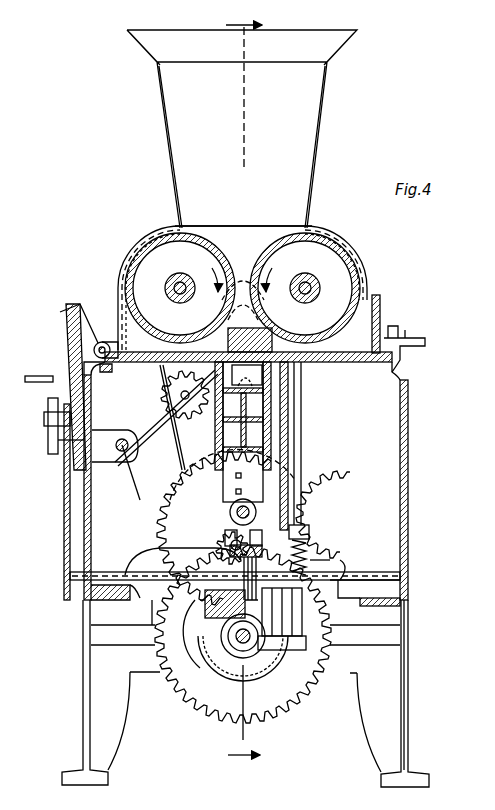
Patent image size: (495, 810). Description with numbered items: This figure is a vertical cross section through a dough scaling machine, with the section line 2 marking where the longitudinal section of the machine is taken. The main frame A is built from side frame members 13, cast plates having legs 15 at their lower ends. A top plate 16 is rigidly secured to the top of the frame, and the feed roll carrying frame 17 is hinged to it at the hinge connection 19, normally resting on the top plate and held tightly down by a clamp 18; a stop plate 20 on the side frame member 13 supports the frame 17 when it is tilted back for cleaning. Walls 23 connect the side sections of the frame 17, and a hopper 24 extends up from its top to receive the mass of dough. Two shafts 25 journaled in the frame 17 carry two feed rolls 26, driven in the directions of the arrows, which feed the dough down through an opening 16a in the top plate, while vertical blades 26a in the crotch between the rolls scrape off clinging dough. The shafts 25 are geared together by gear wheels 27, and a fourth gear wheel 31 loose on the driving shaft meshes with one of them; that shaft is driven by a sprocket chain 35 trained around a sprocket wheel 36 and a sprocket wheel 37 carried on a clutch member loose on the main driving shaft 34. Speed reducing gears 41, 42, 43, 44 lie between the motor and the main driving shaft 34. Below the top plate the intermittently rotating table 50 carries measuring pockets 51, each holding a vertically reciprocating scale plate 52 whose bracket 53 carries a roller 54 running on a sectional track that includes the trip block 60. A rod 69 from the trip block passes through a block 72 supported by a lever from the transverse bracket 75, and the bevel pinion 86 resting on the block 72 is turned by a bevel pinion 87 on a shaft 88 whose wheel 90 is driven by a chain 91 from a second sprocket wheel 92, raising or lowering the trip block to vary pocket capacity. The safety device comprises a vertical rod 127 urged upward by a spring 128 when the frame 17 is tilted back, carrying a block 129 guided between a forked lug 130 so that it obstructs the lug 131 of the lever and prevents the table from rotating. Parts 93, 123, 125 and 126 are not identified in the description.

The section line 2 is at (244, 397).
The hopper 24 is at (318, 162).
The walls 23 is at (138, 232).
The feed rolls 26 is at (268, 234).
The shafts 25 is at (168, 290).
The gear wheels 27 is at (118, 258).
The vertical blades 26a is at (214, 330).
The top plate 16 is at (398, 380).
The opening 16a is at (254, 377).
The clamp 18 is at (396, 347).
The side frame members 13 is at (410, 504).
The legs 15 is at (245, 693).
The feed roll carrying frame 17 is at (120, 330).
The hinge connection 19 is at (94, 350).
The stop plate 20 is at (70, 322).
The handle 93 is at (52, 420).
The second sprocket wheel 92 is at (64, 440).
The chain 91 is at (64, 480).
The arm 125 is at (152, 414).
The pivot pin 126 is at (125, 452).
The link 123 is at (118, 470).
The fourth gear wheel 31 is at (170, 420).
The sprocket wheel 36 is at (188, 420).
The sprocket chain 35 is at (165, 478).
The speed reducing gear 43 is at (225, 545).
The speed reducing gear 42 is at (300, 508).
The speed reducing gear wheel 44 is at (286, 708).
The sprocket wheel 37 is at (237, 640).
The main driving shaft 34 is at (228, 644).
The block 129 is at (292, 660).
The rotatory table 50 is at (272, 412).
The measuring pockets 51 is at (271, 438).
The scale plate 52 is at (265, 426).
The vertical rod 127 is at (300, 460).
The brackets 53 is at (288, 480).
The trip block 60 is at (308, 532).
The spring 128 is at (318, 545).
The rollers 54 is at (236, 508).
The bevel pinion 87 is at (218, 556).
The bevel pinion 86 is at (258, 590).
The wheel 90 is at (74, 582).
The shaft 88 is at (138, 600).
The speed reducing gear 41 is at (152, 620).
The block 72 is at (222, 610).
The forked lug 130 is at (304, 640).
The lug 131 is at (322, 617).
The rod 69 is at (312, 580).
The bracket 75 is at (348, 566).
The main frame A is at (410, 632).